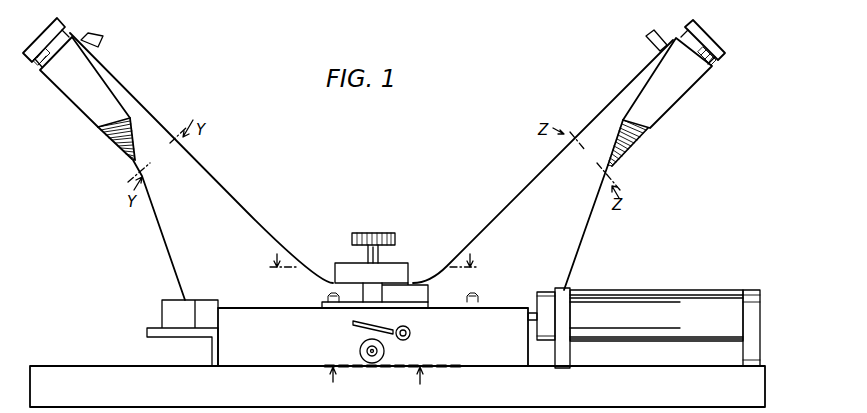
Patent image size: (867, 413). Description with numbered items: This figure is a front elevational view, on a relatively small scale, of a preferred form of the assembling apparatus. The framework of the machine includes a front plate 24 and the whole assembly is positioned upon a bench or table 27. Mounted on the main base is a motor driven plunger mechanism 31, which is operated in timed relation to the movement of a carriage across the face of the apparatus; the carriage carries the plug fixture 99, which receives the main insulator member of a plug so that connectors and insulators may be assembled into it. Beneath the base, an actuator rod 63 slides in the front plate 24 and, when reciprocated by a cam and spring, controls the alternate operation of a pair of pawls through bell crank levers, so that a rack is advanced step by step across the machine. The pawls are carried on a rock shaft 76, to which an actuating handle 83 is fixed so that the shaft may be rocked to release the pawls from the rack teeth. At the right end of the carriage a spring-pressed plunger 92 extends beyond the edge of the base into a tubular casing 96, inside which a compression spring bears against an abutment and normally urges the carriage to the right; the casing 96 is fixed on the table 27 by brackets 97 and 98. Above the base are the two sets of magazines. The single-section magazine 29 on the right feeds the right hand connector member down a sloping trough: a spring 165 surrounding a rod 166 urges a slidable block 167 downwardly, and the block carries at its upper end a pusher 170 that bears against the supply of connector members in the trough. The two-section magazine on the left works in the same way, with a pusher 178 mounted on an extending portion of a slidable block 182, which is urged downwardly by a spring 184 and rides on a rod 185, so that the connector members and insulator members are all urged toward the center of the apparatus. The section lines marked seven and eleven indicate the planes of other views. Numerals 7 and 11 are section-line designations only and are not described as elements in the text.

The front plate 24 is at (268, 354).
The bench or table 27 is at (630, 378).
The plunger mechanism 31 is at (401, 251).
The plug fixture 99 is at (418, 274).
The actuating handle 83 is at (396, 318).
The rock shaft 76 is at (411, 335).
The actuator rod 63 is at (372, 361).
The spring-pressed plunger 92 is at (533, 312).
The bracket 97 is at (572, 296).
The tubular casing 96 is at (645, 302).
The bracket 98 is at (757, 287).
The section line 7- 7 is at (373, 260).
The section line 11- 11 is at (378, 382).
The magazine 29 is at (612, 84).
The pusher 170 is at (647, 36).
The rod 166 is at (713, 62).
The slidable block 167 is at (678, 100).
The spring 165 is at (640, 141).
The pusher 178 is at (103, 37).
The slidable block 182 is at (83, 97).
The spring 184 is at (120, 144).
The rod 185 is at (131, 160).